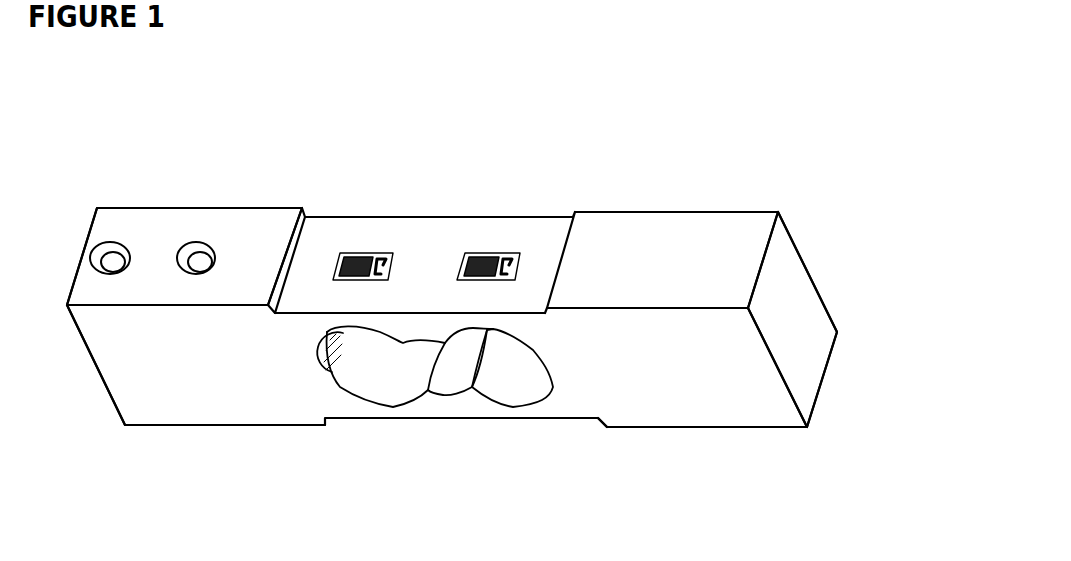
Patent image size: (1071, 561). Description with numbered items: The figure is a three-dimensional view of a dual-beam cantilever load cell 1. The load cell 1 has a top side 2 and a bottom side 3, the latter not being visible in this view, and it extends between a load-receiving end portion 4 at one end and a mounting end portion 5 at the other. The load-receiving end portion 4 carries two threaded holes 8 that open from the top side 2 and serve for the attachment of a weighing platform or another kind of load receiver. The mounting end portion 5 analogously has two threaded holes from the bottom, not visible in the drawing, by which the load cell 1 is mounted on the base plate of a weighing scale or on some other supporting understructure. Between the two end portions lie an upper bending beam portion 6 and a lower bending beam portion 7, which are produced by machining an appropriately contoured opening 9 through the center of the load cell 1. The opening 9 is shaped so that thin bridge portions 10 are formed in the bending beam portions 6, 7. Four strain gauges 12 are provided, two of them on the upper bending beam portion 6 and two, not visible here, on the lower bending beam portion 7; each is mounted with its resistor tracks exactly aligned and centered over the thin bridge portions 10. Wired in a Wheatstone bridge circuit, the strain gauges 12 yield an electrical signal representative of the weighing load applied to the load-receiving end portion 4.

The dual-beam cantilever load cell 1 is at (693, 147).
The top side 2 is at (263, 238).
The bottom side 3 is at (578, 423).
The load-receiving end portion 4 is at (163, 363).
The mounting end portion 5 is at (733, 377).
The upper bending beam portion 6 is at (417, 327).
The lower bending beam portion 7 is at (448, 402).
The threaded holes 8 is at (195, 263).
The contoured opening 9 is at (508, 363).
The thin bridge portions 10 is at (387, 410).
The strain gauges 12 is at (485, 262).